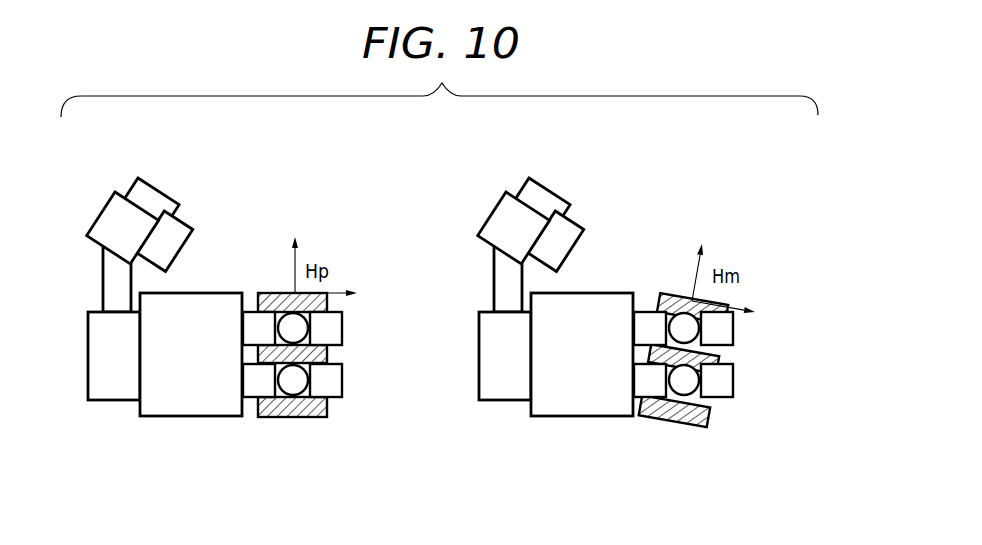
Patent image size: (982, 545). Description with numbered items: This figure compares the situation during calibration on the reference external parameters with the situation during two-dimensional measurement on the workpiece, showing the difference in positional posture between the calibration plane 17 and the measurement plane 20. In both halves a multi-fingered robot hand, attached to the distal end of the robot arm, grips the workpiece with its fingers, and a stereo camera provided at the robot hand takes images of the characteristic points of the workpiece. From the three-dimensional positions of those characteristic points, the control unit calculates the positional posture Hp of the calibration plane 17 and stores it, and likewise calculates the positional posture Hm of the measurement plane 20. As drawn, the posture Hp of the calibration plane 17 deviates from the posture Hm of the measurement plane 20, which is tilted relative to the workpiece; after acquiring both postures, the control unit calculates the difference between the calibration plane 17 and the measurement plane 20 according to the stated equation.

The calibration plane 17 is at (276, 295).
The measurement plane 20 is at (666, 294).